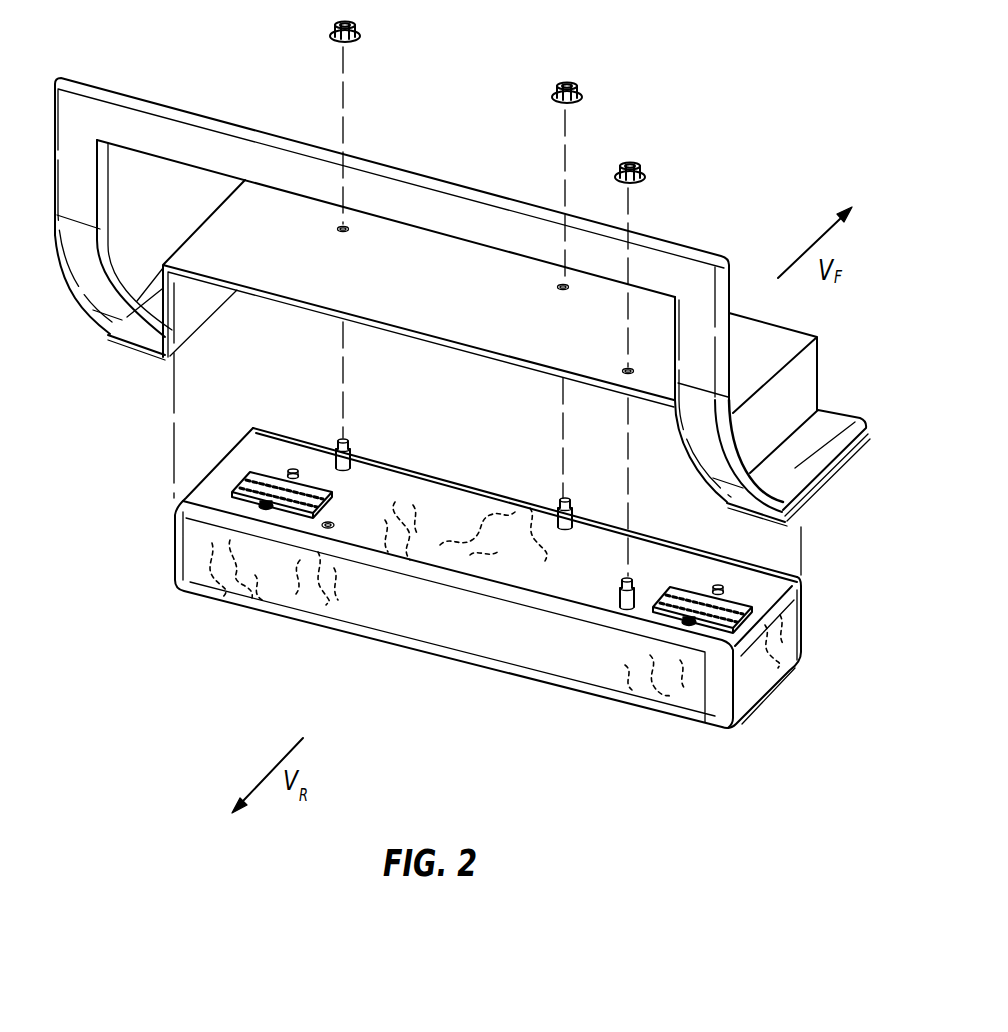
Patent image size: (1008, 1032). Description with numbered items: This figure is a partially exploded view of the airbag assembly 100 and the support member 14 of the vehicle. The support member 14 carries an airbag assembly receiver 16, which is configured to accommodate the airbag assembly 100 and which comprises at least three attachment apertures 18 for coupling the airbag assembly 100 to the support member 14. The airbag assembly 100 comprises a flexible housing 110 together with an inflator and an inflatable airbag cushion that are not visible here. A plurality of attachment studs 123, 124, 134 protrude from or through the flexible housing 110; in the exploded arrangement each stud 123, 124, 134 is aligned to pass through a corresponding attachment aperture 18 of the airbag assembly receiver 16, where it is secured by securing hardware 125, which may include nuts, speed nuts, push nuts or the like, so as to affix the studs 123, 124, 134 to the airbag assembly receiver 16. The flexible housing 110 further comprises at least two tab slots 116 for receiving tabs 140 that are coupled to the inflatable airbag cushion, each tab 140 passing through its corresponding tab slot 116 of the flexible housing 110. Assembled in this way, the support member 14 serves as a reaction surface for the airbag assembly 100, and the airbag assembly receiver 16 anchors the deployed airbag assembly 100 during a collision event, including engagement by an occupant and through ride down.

The support member 14 is at (134, 130).
The airbag assembly receiver 16 is at (468, 304).
The attachment apertures 18 is at (339, 226).
The airbag assembly 100 is at (237, 685).
The flexible housing 110 is at (432, 608).
The tab slots 116 is at (291, 473).
The attachment stud 123 is at (556, 515).
The attachment stud 124 is at (352, 458).
The securing hardware 125 is at (360, 30).
The attachment stud 134 is at (619, 598).
The tabs 140 is at (266, 471).